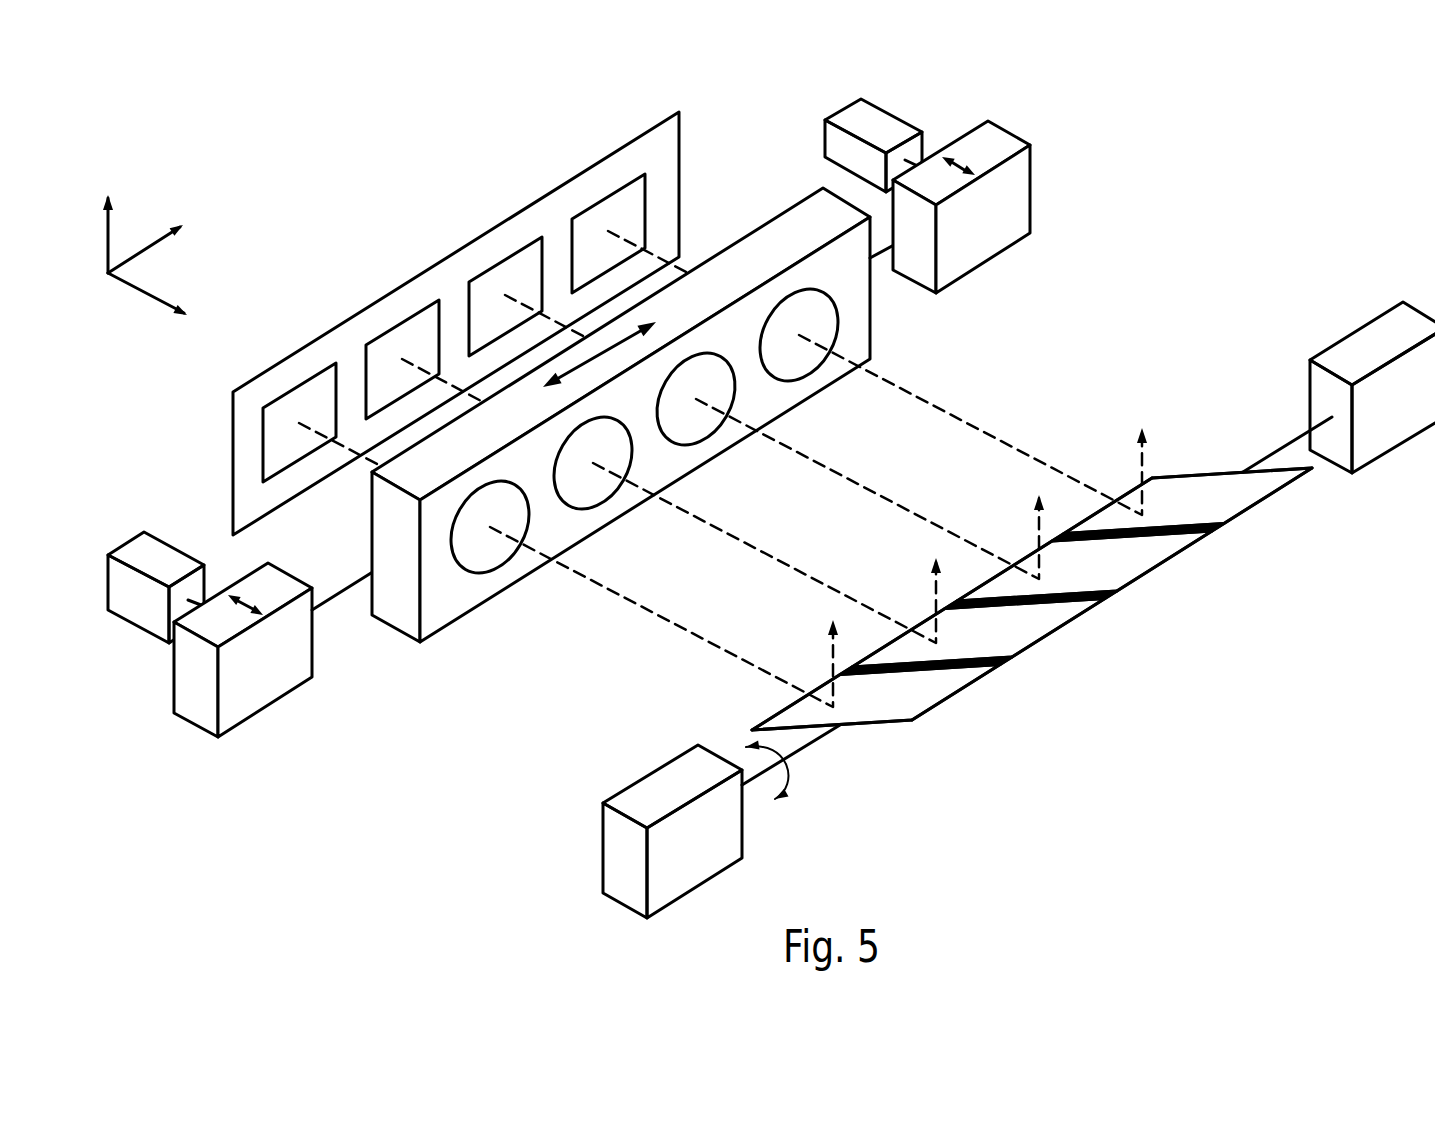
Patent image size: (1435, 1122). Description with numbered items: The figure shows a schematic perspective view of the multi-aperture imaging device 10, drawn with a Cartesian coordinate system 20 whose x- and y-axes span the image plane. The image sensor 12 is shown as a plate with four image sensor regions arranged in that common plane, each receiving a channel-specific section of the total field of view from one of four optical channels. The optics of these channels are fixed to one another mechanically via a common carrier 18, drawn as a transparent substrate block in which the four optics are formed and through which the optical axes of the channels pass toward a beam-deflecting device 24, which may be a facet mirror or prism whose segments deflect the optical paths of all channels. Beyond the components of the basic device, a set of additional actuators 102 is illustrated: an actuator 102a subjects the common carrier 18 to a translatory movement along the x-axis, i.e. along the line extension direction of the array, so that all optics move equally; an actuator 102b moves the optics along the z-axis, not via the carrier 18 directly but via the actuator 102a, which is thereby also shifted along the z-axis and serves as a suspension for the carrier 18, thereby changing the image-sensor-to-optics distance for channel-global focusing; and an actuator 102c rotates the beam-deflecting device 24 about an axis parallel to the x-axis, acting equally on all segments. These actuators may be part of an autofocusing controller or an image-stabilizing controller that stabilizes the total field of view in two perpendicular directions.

The multi-aperture imaging device 10 is at (1368, 85).
The image sensor 12 is at (432, 263).
The common carrier 18 is at (393, 628).
The Cartesian coordinate system 20 is at (108, 273).
The beam-deflecting device 24 is at (880, 735).
The actuators 102 is at (1130, 278).
The actuator 102a is at (1030, 170).
The actuator 102b is at (888, 110).
The actuator 102c is at (1357, 328).